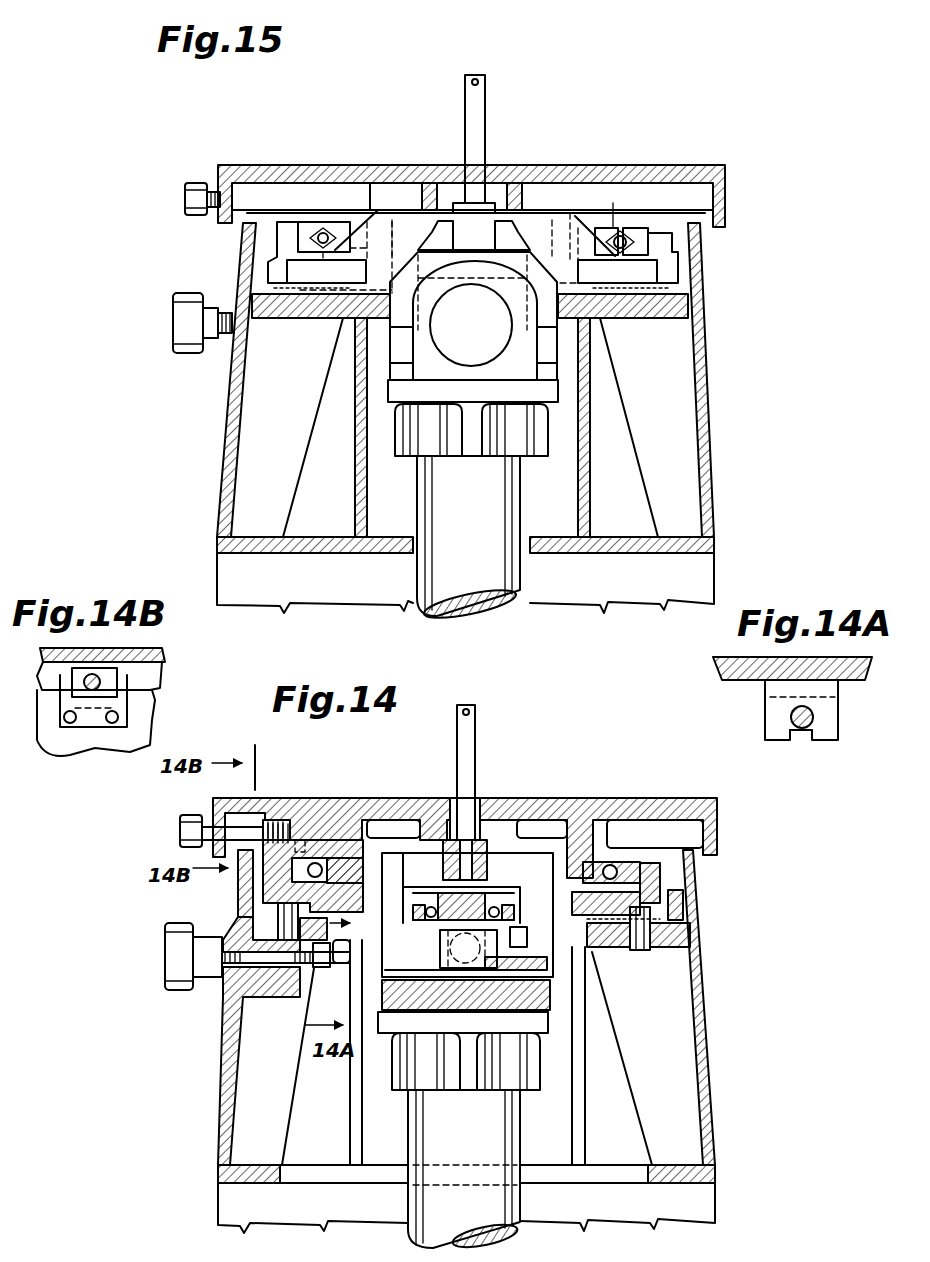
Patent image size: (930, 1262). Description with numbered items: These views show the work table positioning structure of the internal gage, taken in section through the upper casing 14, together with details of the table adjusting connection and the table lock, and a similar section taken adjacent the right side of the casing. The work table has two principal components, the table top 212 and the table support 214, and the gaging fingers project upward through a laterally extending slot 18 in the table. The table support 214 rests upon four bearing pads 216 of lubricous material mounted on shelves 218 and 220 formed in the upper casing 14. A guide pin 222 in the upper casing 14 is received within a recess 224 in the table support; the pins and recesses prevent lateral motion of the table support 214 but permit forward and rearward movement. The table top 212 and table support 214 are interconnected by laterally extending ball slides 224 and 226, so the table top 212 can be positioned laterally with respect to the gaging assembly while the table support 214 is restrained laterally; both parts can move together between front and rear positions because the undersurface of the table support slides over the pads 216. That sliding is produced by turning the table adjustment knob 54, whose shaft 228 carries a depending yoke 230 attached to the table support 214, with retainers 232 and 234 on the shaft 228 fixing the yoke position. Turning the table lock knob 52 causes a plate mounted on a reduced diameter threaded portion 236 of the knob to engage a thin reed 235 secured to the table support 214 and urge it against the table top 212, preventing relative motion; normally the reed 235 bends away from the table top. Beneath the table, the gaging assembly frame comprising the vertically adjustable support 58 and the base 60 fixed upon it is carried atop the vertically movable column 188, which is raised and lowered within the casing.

In FIG. 15, the upper casing 14 is at (700, 366).
In FIG. 14, the upper casing 14 is at (705, 992).
In FIG. 14, the laterally extending slot 18 is at (482, 798).
In FIG. 15, the table lock knob 52 is at (192, 194).
In FIG. 14, the table lock knob 52 is at (188, 826).
In FIG. 15, the table adjustment knob 54 is at (183, 318).
In FIG. 14, the table adjustment knob 54 is at (175, 950).
In FIG. 15, the vertically adjustable support 58 is at (548, 390).
In FIG. 14, the vertically adjustable support 58 is at (540, 1022).
In FIG. 14, the base 60 is at (535, 998).
In FIG. 15, the vertically movable column 188 is at (465, 523).
In FIG. 14, the vertically movable column 188 is at (462, 1147).
In FIG. 15, the table top 212 is at (692, 175).
In FIG. 14, the table top 212 is at (670, 808).
In FIG. 14B, the table top 212 is at (142, 688).
In FIG. 15, the table support 214 is at (658, 242).
In FIG. 14, the table support 214 is at (350, 888).
In FIG. 14B, the table support 214 is at (87, 742).
In FIG. 15, the bearing pads 216 is at (313, 292).
In FIG. 14, the bearing pads 216 is at (610, 950).
In FIG. 15, the shelf 218 is at (268, 270).
In FIG. 14, the shelf 218 is at (262, 895).
In FIG. 15, the shelf 220 is at (690, 282).
In FIG. 14, the shelf 220 is at (692, 900).
In FIG. 14, the guide pin 222 is at (697, 930).
In FIG. 15, the ball slide 224 is at (311, 232).
In FIG. 14, the ball slide 224 is at (320, 862).
In FIG. 15, the ball slide 226 is at (613, 203).
In FIG. 14, the ball slide 226 is at (597, 860).
In FIG. 14, the shaft 228 is at (226, 985).
In FIG. 14A, the shaft 228 is at (775, 717).
In FIG. 14, the depending yoke 230 is at (340, 935).
In FIG. 14A, the depending yoke 230 is at (828, 727).
In FIG. 14, the retainer 232 is at (300, 990).
In FIG. 14A, the retainer 232 is at (815, 717).
In FIG. 14, the retainer 234 is at (352, 957).
In FIG. 14, the thin reed 235 is at (300, 845).
In FIG. 14B, the thin reed 235 is at (118, 703).
In FIG. 14, the reduced diameter threaded portion 236 is at (276, 833).
In FIG. 14B, the reduced diameter threaded portion 236 is at (100, 680).